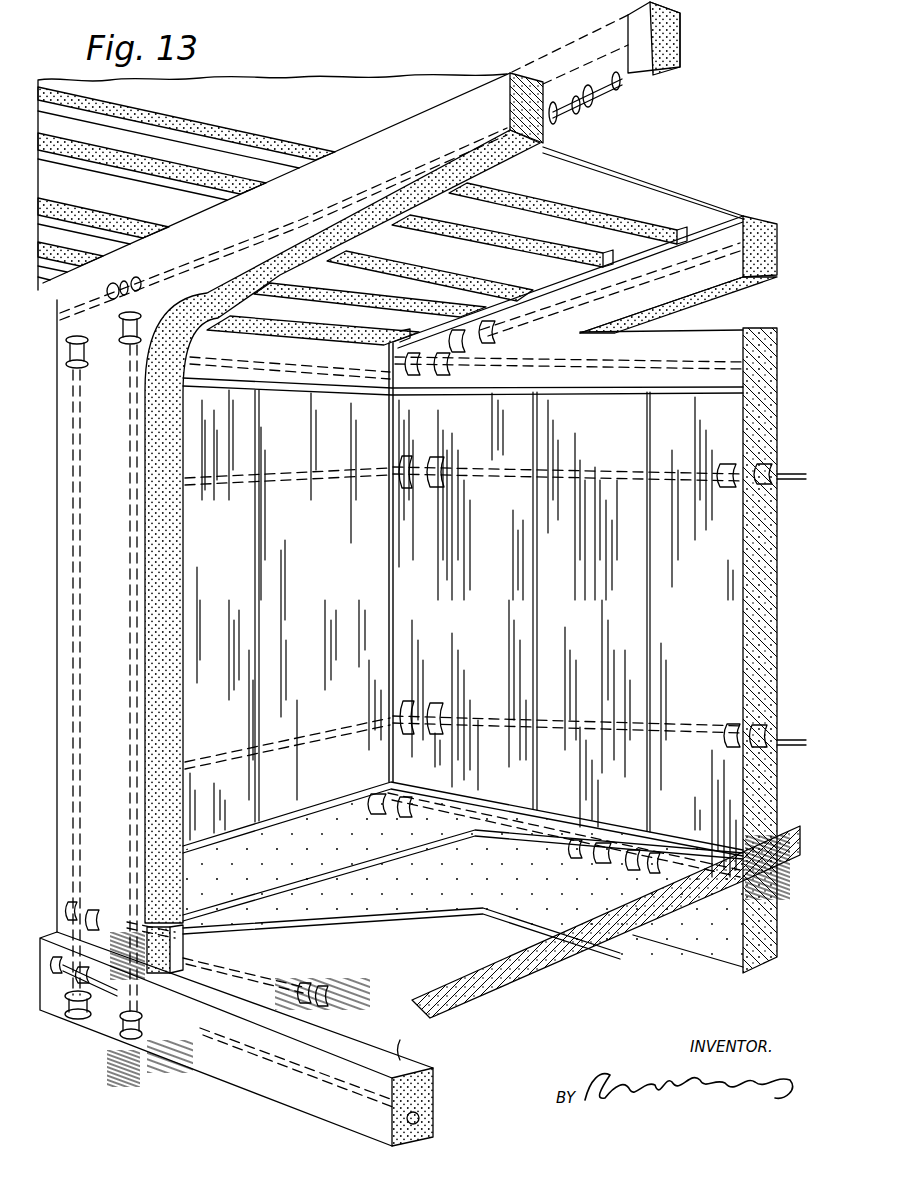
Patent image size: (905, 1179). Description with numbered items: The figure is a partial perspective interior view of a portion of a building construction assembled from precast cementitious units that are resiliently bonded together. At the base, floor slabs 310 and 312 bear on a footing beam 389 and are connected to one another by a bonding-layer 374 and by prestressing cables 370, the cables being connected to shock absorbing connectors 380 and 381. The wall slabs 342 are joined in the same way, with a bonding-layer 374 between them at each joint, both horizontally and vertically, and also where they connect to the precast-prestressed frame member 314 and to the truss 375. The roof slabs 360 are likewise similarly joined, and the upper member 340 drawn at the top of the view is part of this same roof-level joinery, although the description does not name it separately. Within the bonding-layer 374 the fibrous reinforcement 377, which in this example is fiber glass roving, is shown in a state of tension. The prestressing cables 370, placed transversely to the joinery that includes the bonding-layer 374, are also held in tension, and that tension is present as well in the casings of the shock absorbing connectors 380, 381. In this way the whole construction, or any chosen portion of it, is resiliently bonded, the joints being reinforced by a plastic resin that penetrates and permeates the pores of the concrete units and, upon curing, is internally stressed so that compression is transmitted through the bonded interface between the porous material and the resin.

The floor slab 310 is at (446, 908).
The floor slab 312 is at (552, 968).
The frame precast member 314 is at (166, 806).
The ceiling beam 340 is at (522, 44).
The wall slab 342 is at (322, 556).
The roof slab 360 is at (672, 180).
The prestressing cable 370 is at (284, 214).
The bonding-layer 374 is at (562, 398).
The truss 375 is at (708, 300).
The fibrous reinforcement 377 is at (404, 1032).
The shock absorbing connector 380 is at (567, 110).
The shock absorbing connector 381 is at (613, 90).
The footing beam 389 is at (728, 947).